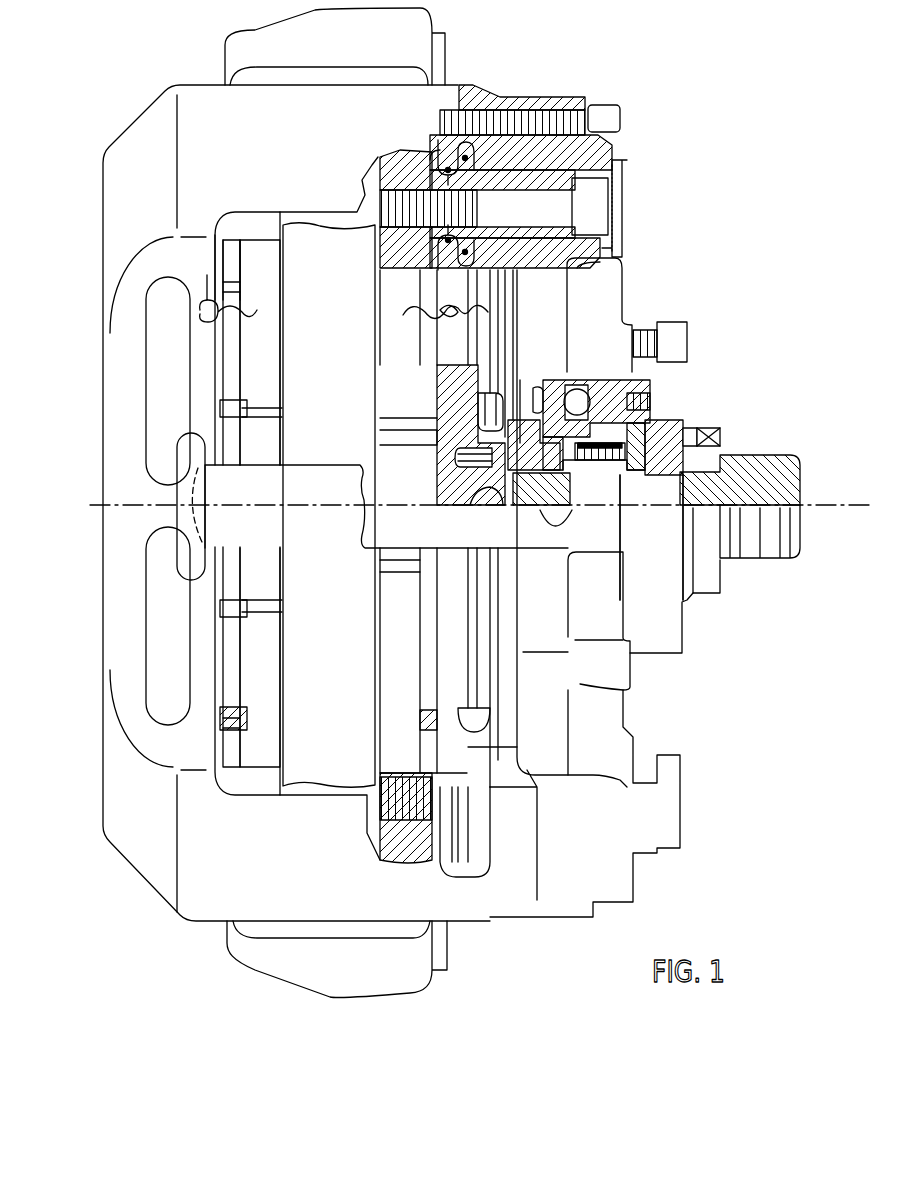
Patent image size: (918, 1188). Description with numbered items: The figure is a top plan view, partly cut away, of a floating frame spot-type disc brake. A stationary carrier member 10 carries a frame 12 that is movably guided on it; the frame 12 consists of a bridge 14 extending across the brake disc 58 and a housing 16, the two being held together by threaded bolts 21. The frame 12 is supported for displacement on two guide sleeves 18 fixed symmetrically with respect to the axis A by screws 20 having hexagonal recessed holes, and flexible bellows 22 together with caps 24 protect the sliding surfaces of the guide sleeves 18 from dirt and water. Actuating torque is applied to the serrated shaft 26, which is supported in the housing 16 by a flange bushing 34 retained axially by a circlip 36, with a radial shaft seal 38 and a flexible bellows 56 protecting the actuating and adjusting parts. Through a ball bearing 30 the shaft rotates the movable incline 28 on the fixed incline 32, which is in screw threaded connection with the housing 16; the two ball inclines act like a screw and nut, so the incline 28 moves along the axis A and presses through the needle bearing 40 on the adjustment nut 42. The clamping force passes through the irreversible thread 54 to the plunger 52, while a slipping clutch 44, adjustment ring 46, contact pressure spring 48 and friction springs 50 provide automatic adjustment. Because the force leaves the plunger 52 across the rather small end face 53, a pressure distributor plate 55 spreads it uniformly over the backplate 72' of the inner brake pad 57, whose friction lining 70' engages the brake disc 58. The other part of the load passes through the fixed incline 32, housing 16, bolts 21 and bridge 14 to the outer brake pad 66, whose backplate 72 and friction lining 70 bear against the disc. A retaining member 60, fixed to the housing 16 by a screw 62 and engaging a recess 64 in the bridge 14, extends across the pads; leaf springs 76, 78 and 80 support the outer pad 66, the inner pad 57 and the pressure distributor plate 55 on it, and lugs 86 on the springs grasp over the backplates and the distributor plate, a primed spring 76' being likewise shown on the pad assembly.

The carrier member 10 is at (413, 32).
The frame 12 is at (490, 84).
The bridge 14 is at (352, 122).
The housing 16 is at (583, 147).
The guide sleeves 18 is at (578, 165).
The screws 20 is at (597, 200).
The threaded bolts 21 is at (605, 117).
The flexible bellows 22 is at (450, 135).
The caps 24 is at (620, 222).
The serrated shaft 26 is at (755, 572).
The movable incline 28 is at (570, 390).
The ball bearing 30 is at (582, 392).
The fixed incline 32 is at (650, 393).
The flange bushing 34 is at (670, 476).
The circlip 36 is at (700, 425).
The radial shaft seal 38 is at (720, 440).
The needle bearing 40 is at (538, 388).
The adjustment nut 42 is at (530, 467).
The slipping clutch 44 is at (583, 533).
The adjustment ring 46 is at (572, 340).
The contact pressure spring 48 is at (595, 462).
The friction springs 50 is at (634, 472).
The plunger 52 is at (664, 487).
The end face 53 is at (460, 490).
The irreversible thread 54 is at (500, 497).
The pressure distributor plate 55 is at (432, 340).
The flexible bellows 56 is at (476, 398).
The inner brake pad 57 is at (368, 654).
The brake disc 58 is at (335, 272).
The retaining member 60 is at (319, 542).
The screw 62 is at (553, 533).
The recess 64 is at (202, 494).
The outer brake pad 66 is at (292, 645).
The friction lining 70 is at (260, 503).
The friction lining 70' is at (423, 521).
The backplate 72 is at (266, 494).
The backplate 72' is at (388, 521).
The leaf spring 76 is at (275, 510).
The friction lining 76' is at (379, 578).
The leaf spring 78 is at (415, 438).
The leaf spring 80 is at (447, 333).
The lugs 86 is at (245, 400).
The axis A is at (92, 503).